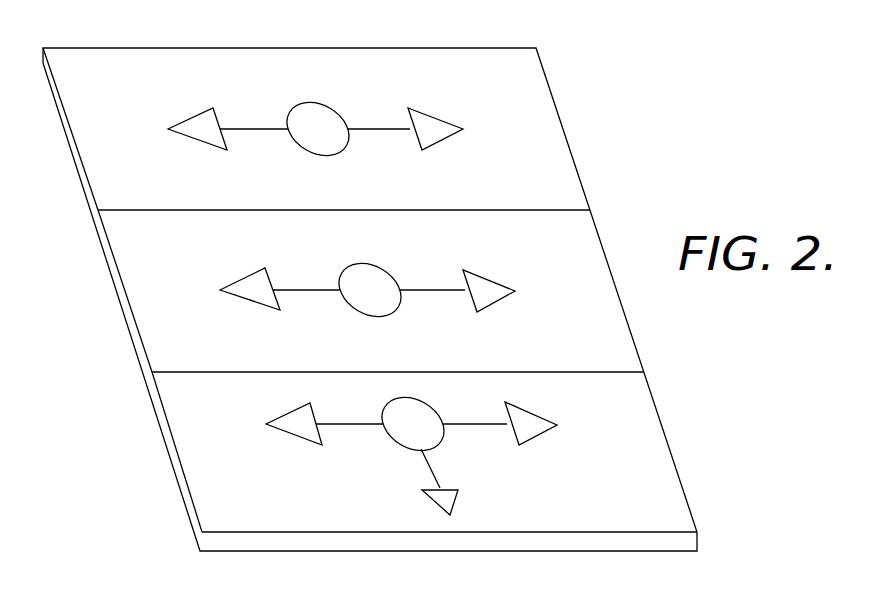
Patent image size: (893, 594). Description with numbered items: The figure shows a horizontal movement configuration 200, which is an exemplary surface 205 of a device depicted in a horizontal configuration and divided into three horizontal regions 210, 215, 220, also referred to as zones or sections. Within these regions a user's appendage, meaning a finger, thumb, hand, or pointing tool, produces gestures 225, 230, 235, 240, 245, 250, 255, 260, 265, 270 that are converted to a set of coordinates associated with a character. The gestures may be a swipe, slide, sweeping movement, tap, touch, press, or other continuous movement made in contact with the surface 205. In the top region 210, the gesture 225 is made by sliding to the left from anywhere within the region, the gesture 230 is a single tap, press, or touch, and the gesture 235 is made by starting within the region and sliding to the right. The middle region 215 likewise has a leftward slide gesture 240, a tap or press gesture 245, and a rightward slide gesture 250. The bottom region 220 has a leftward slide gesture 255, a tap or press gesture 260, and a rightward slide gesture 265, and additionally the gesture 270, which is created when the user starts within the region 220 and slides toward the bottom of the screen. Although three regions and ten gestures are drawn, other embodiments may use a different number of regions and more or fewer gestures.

The horizontal movement configuration 200 is at (661, 118).
The surface 205 is at (477, 552).
The horizontal region 210 is at (72, 143).
The horizontal region 215 is at (122, 300).
The horizontal region 220 is at (170, 445).
The gesture 225 is at (196, 112).
The gesture 230 is at (310, 103).
The gesture 235 is at (412, 108).
The gesture 240 is at (248, 270).
The gesture 245 is at (362, 265).
The gesture 250 is at (463, 268).
The gesture 255 is at (290, 405).
The gesture 260 is at (405, 400).
The gesture 265 is at (505, 402).
The gesture 270 is at (456, 497).